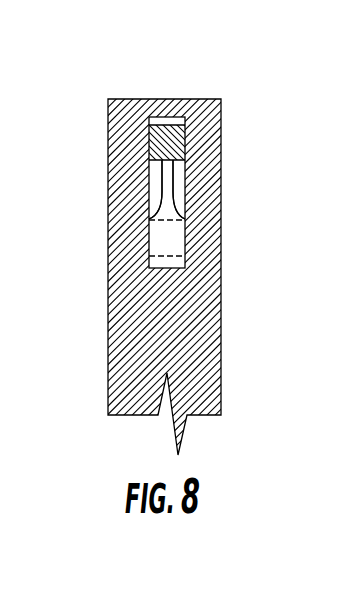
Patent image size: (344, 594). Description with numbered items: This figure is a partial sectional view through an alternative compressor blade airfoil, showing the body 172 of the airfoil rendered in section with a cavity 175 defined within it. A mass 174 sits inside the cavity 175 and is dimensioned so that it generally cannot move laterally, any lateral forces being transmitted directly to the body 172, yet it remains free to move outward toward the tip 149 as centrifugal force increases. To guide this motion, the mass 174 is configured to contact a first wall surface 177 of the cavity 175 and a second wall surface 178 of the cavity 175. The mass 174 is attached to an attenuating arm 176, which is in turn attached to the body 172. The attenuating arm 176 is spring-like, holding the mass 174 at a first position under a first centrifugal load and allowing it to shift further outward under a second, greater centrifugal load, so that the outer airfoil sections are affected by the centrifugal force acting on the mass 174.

The tip 149 is at (208, 99).
The body 172 is at (160, 330).
The mass 174 is at (167, 134).
The cavity 175 is at (185, 237).
The attenuating arm 176 is at (161, 192).
The first wall surface 177 is at (161, 174).
The second wall surface 178 is at (180, 177).